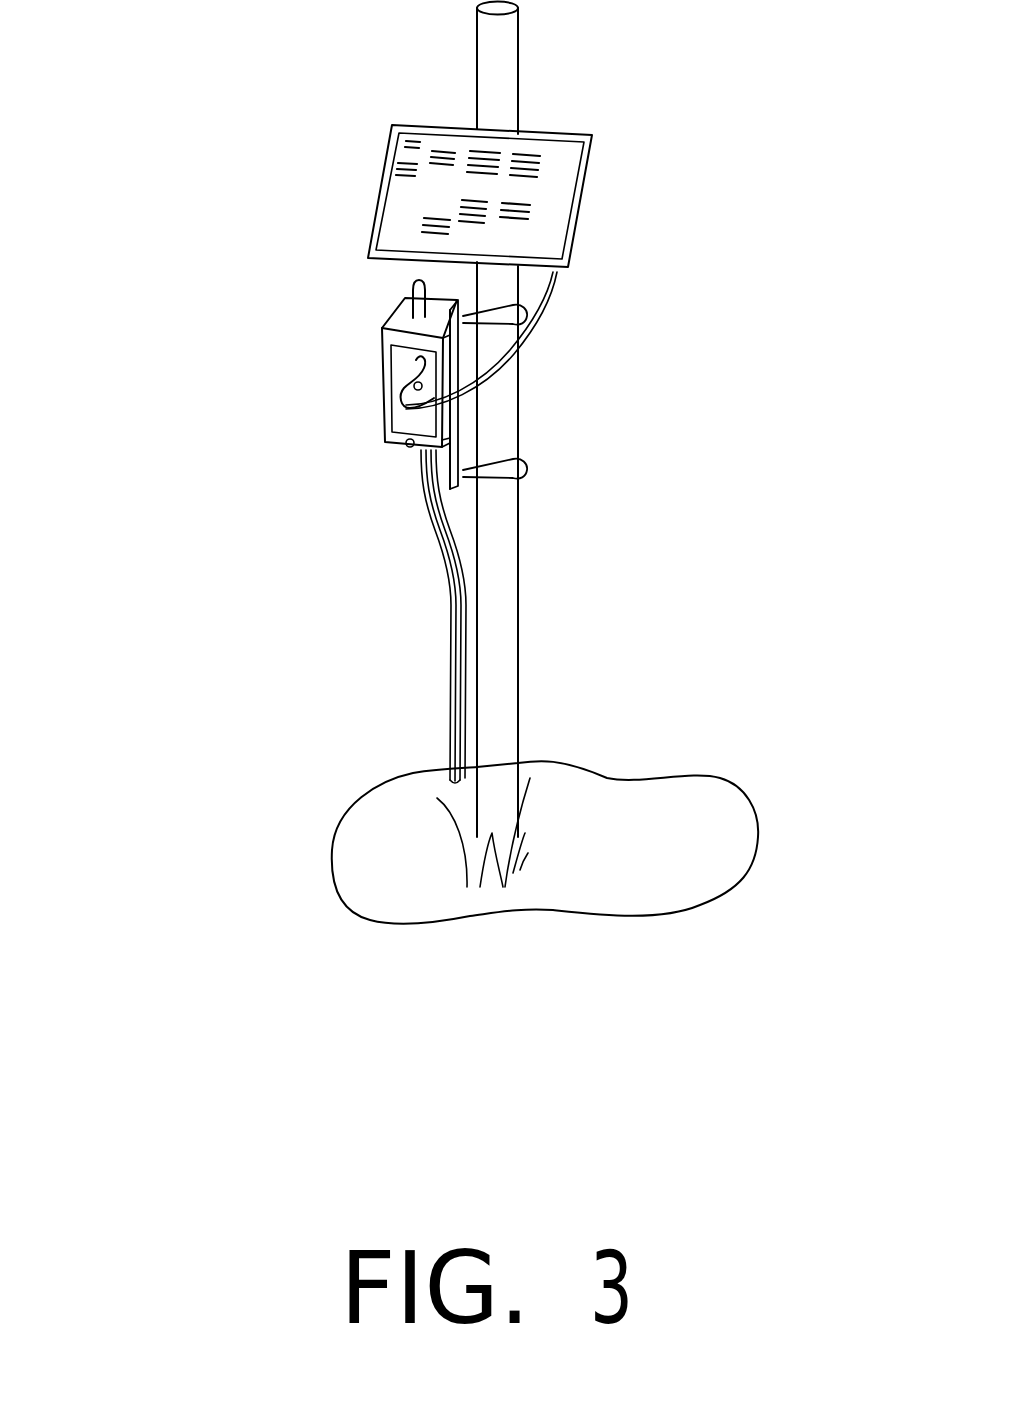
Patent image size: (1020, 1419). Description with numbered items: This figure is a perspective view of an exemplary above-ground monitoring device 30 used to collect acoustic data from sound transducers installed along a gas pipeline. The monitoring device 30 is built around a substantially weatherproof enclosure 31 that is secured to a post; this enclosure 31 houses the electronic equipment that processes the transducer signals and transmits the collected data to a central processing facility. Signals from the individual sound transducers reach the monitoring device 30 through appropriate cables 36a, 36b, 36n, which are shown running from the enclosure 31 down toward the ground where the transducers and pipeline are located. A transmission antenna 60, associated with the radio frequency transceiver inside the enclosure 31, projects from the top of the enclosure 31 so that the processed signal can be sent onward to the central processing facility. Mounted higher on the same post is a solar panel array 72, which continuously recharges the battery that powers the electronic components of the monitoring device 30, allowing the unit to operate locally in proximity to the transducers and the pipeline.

The monitoring device 30 is at (250, 255).
The solar panel array 72 is at (572, 175).
The transmission antenna 60 is at (413, 295).
The enclosure 31 is at (383, 438).
The cable 36a is at (440, 553).
The cable 36b is at (455, 690).
The cable 36n is at (465, 613).